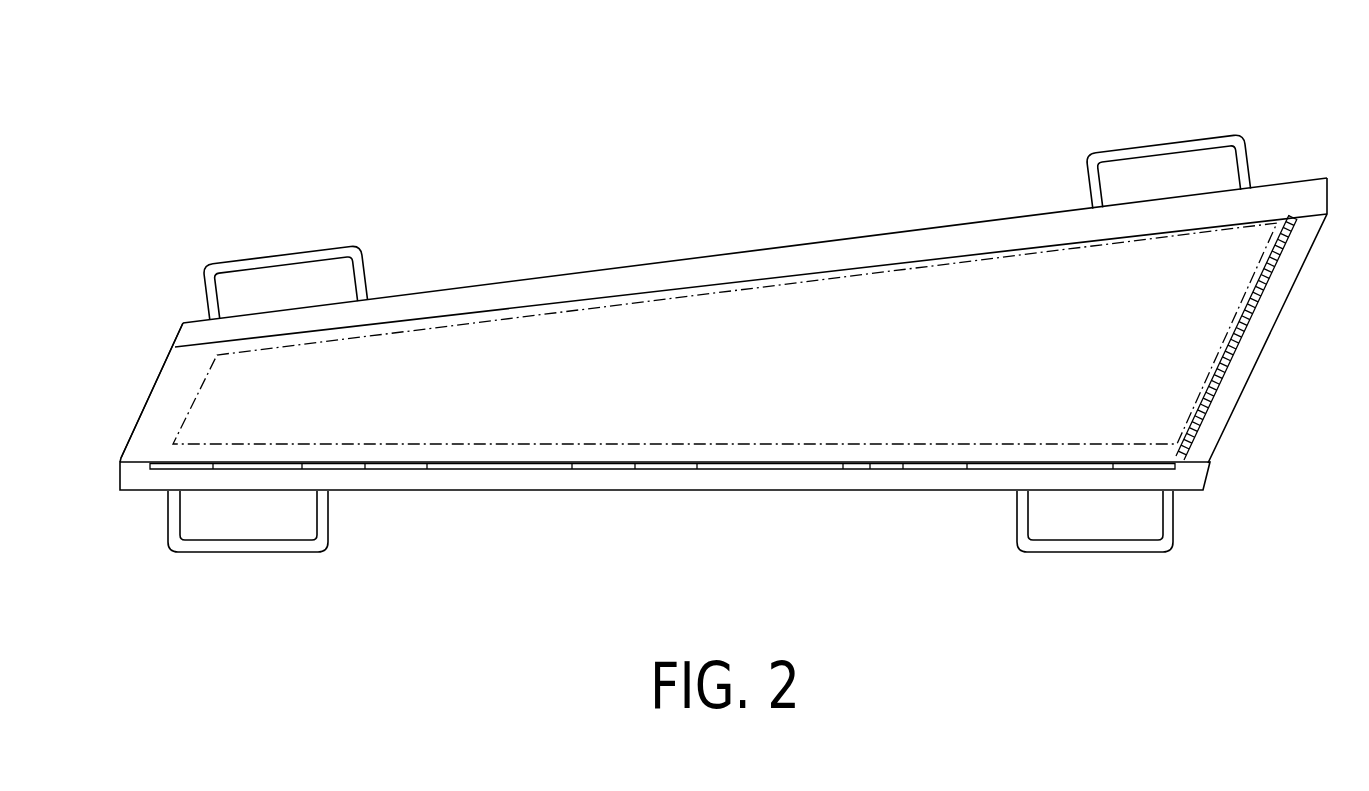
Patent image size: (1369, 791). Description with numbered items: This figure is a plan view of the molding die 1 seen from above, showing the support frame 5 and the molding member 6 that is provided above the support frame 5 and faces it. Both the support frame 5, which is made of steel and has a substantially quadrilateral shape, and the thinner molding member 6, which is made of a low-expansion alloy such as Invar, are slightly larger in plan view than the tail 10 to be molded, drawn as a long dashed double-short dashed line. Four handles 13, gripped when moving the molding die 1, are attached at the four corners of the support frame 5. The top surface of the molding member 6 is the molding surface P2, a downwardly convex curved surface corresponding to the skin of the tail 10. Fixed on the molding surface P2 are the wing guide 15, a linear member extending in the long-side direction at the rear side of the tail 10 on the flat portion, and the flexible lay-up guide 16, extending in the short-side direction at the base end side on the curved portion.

The molding die 1 is at (810, 96).
The support frame 5 is at (893, 234).
The molding member 6 is at (630, 282).
The tail 10 is at (453, 320).
The handles 13 is at (280, 248).
The wing guide 15 is at (853, 468).
The lay-up guide 16 is at (1225, 378).
The molding surface P2 is at (178, 400).